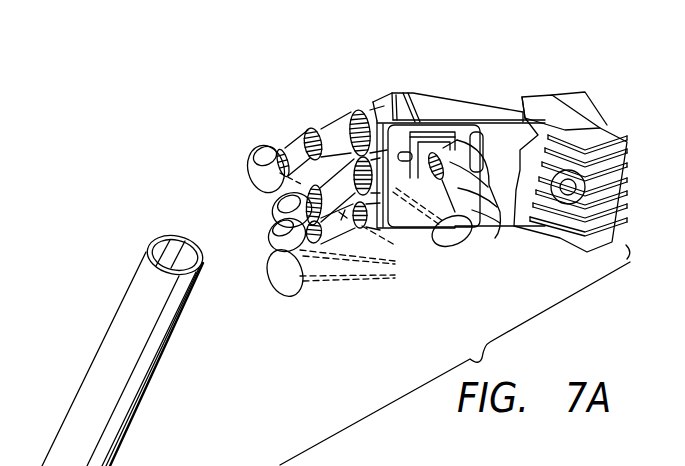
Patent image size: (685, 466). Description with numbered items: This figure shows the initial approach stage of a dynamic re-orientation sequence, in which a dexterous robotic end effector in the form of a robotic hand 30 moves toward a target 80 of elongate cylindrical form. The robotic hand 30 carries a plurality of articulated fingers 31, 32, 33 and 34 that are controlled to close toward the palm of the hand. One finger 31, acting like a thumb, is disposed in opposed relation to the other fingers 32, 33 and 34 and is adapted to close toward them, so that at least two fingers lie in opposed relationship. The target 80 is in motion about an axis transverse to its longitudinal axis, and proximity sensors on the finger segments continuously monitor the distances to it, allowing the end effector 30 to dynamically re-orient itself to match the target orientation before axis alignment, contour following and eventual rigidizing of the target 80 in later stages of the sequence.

The robotic hand 30 is at (484, 104).
The finger 31 is at (455, 237).
The finger 32 is at (280, 275).
The finger 33 is at (275, 238).
The finger 34 is at (258, 168).
The target 80 is at (180, 331).